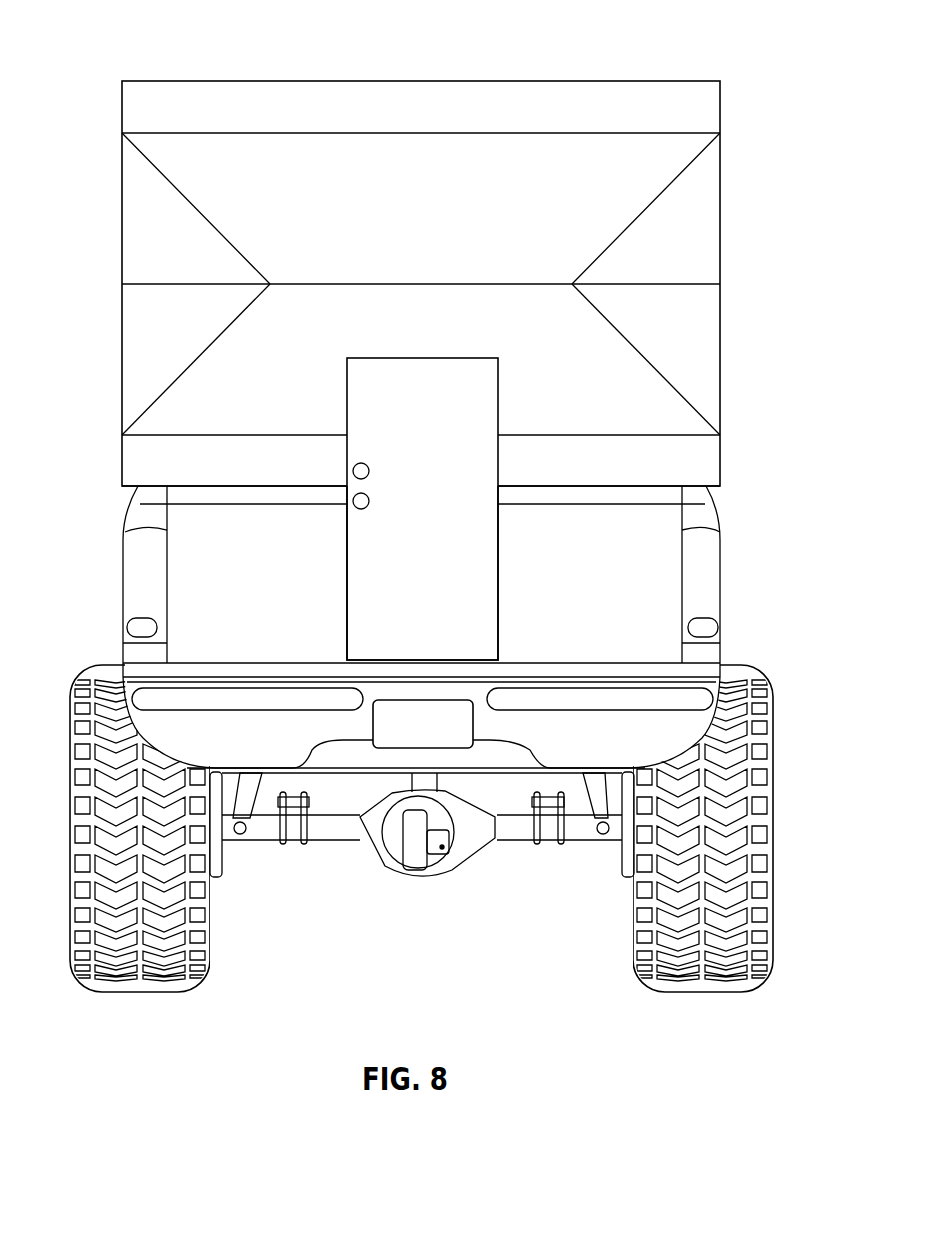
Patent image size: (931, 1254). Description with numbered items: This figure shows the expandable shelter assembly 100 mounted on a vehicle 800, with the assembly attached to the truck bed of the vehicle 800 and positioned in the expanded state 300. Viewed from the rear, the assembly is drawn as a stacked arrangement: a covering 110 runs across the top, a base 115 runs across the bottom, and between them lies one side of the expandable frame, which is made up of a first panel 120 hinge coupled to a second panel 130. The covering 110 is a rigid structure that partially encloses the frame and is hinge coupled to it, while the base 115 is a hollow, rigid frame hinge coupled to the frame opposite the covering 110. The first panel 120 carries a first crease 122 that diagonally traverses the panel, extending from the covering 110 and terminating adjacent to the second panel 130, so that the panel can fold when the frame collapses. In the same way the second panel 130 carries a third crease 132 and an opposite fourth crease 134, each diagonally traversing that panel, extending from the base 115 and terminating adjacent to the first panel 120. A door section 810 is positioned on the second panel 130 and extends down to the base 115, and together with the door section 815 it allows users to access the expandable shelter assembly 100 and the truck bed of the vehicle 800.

The expandable shelter assembly 100 is at (422, 58).
The covering 110 is at (642, 120).
The base 115 is at (642, 470).
The first panel 120 is at (440, 207).
The first crease 122 is at (210, 221).
The second panel 130 is at (439, 335).
The third crease 132 is at (215, 341).
The fourth crease 134 is at (628, 341).
The collapsed state 300 is at (731, 76).
The vehicle 800 is at (255, 597).
The door section 810 is at (439, 410).
The door section 815 is at (440, 577).